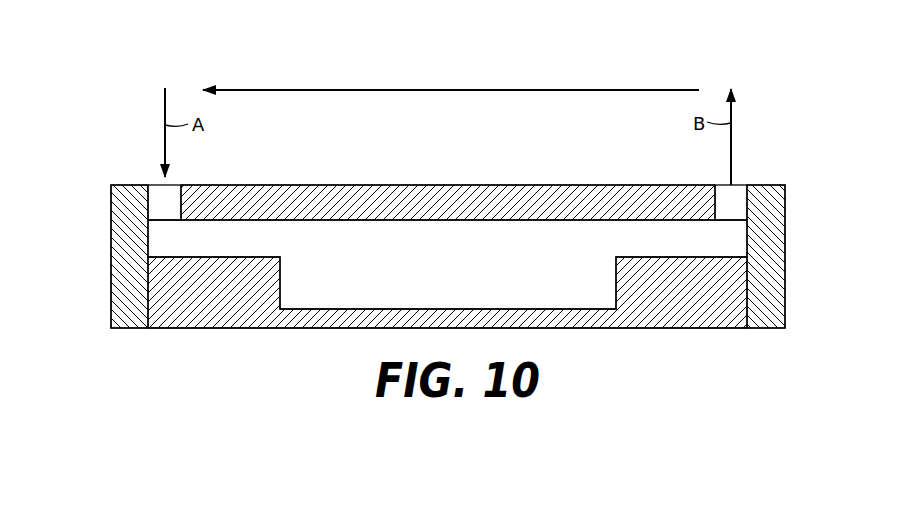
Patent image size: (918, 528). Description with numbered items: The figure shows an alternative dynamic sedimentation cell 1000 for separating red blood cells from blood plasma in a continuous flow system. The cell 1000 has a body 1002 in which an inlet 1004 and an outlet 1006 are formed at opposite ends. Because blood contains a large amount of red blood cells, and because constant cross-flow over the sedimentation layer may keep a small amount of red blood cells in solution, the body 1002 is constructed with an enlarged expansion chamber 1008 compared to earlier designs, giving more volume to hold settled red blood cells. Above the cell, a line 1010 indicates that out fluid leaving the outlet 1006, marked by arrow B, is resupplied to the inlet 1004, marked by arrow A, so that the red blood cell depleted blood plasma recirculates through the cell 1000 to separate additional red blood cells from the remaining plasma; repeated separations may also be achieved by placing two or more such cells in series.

The cell 1000 is at (258, 61).
The body 1002 is at (74, 146).
The inlet 1004 is at (157, 185).
The outlet 1006 is at (738, 185).
The enlarged expansion chamber 1008 is at (425, 267).
The line 1010 is at (455, 90).